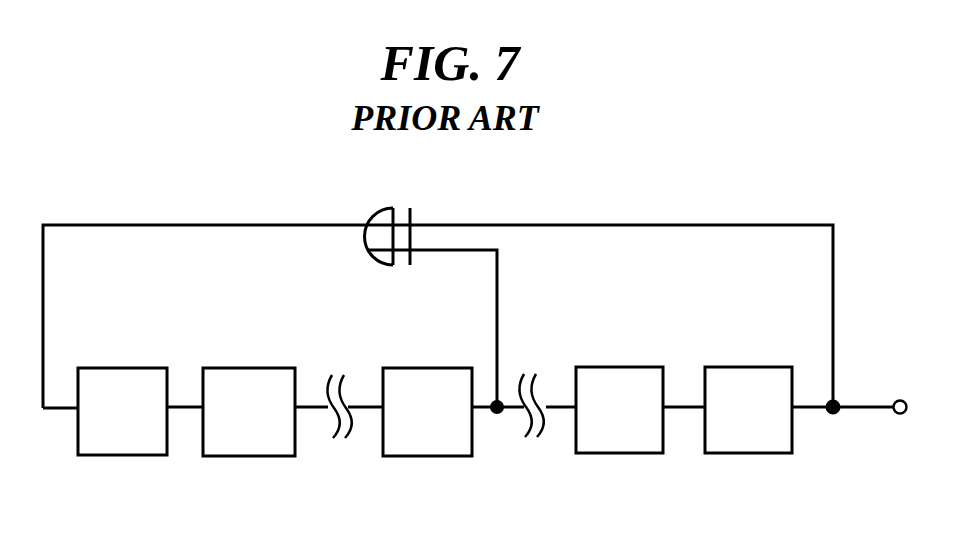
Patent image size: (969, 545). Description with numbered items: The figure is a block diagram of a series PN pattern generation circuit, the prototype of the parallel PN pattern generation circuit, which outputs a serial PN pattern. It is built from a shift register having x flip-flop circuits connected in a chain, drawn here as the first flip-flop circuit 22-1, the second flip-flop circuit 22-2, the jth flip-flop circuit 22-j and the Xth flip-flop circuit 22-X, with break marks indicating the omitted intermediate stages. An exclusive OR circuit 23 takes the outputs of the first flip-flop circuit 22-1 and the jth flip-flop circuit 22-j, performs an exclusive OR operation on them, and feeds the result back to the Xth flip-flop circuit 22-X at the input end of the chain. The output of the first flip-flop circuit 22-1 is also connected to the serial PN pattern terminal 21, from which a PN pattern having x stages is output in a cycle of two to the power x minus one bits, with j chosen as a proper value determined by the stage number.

The serial PN pattern input terminal 21 is at (897, 400).
The exclusive OR circuit 23 is at (398, 206).
The Xth flip-flop circuit 22-X is at (113, 456).
The jth flip-flop circuit 22-j is at (423, 456).
The second flip-flop circuit 22-2 is at (618, 454).
The first flip-flop circuit 22-1 is at (747, 454).